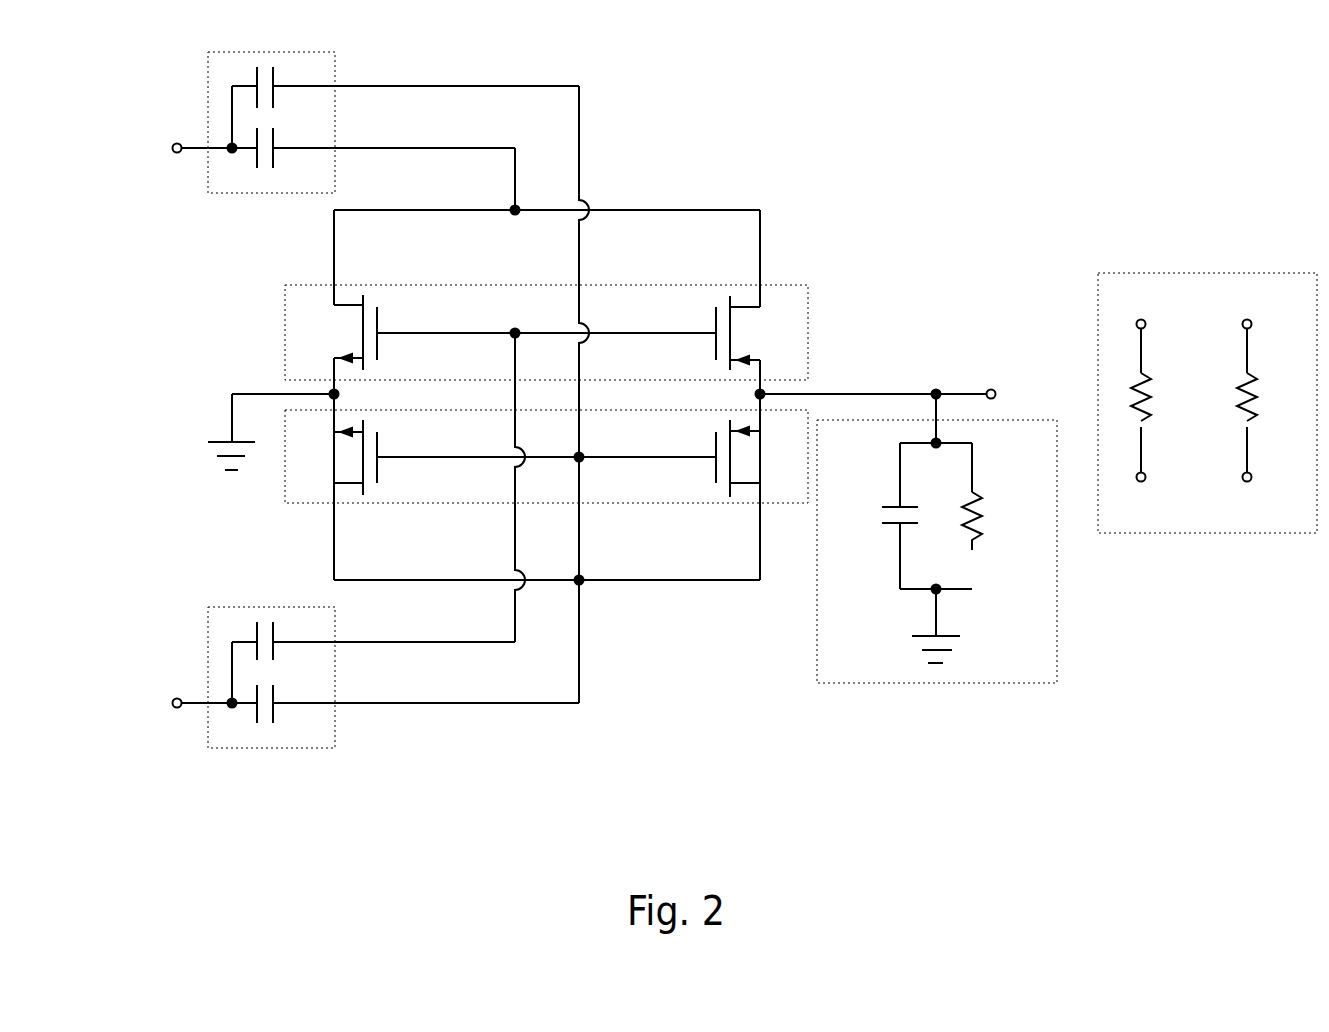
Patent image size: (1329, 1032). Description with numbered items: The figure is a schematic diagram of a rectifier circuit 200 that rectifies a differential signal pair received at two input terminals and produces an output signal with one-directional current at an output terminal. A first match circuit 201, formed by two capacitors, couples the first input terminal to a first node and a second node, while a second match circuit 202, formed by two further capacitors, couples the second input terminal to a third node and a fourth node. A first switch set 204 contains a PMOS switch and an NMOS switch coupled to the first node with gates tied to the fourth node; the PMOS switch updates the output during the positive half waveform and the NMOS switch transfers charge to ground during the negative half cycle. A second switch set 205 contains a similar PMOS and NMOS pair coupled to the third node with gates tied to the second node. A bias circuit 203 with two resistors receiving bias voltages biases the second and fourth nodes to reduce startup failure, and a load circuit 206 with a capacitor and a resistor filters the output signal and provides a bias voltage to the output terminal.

The rectifier circuit 200 is at (1224, 44).
The match circuit 201 is at (208, 52).
The match circuit 202 is at (208, 607).
The bias circuit 203 is at (1098, 273).
The switch set 204 is at (285, 285).
The switch set 205 is at (285, 503).
The load circuit 206 is at (817, 683).